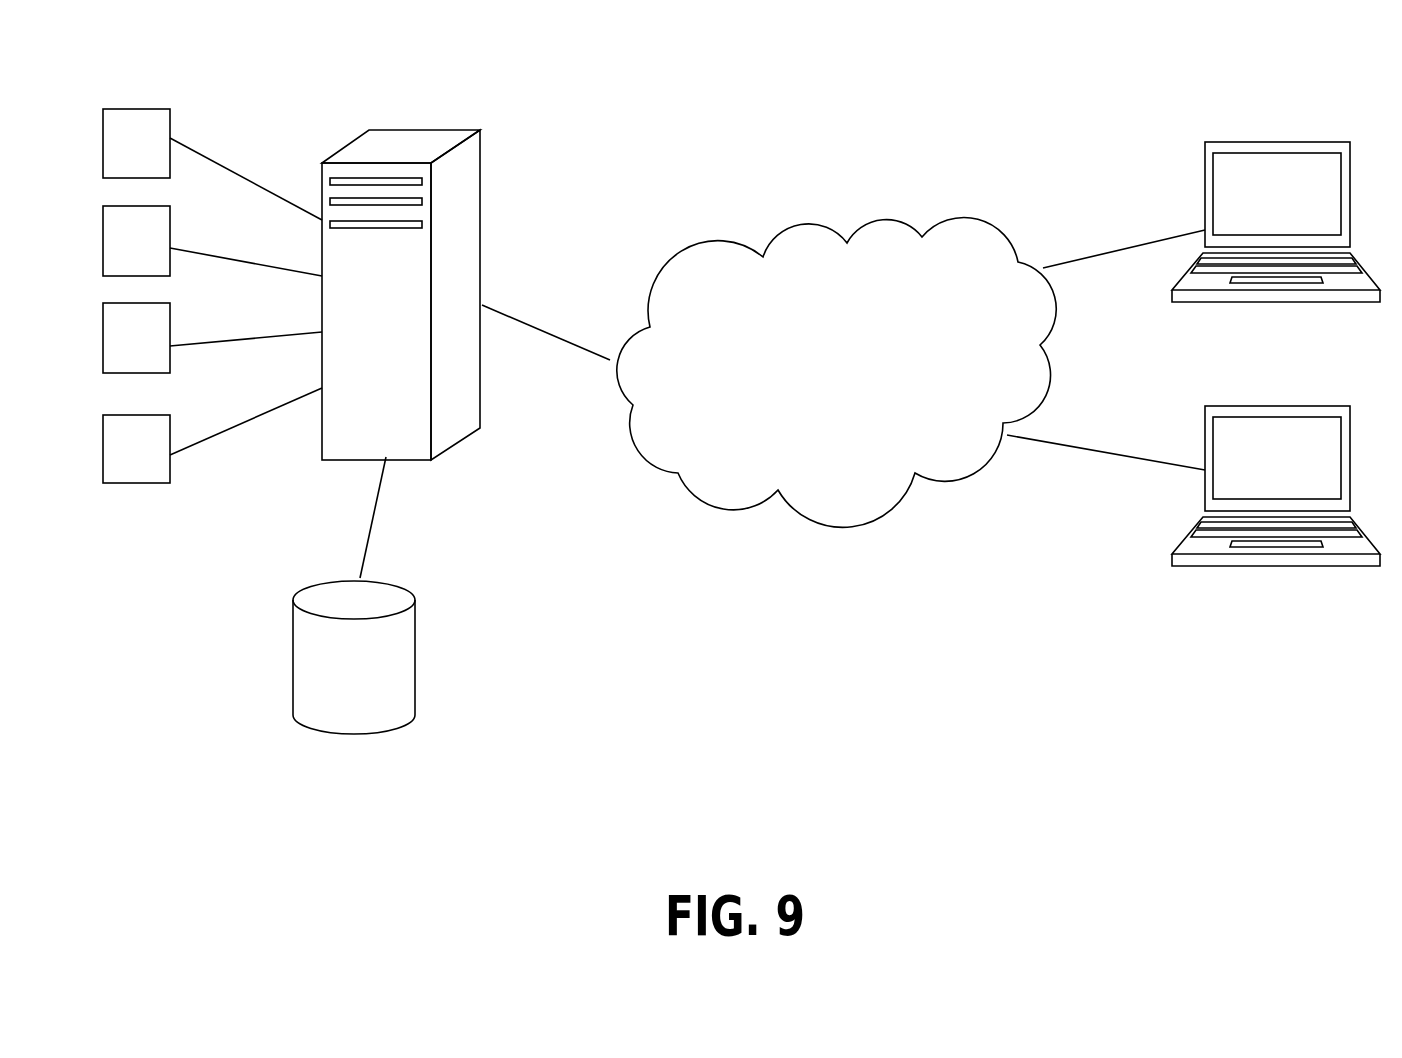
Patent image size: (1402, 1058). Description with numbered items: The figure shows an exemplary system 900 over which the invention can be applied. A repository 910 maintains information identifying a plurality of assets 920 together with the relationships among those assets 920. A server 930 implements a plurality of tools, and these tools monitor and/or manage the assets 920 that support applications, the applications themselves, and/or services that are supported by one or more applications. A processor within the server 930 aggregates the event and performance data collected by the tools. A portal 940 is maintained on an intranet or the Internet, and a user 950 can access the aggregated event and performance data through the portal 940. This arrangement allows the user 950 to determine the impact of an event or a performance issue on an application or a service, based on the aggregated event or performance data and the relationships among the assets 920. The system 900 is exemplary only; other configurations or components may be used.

The system 900 is at (985, 722).
The repository 910 is at (415, 660).
The assets 920 is at (140, 108).
The server 930 is at (482, 152).
The portal 940 is at (828, 222).
The user 950 is at (1255, 142).